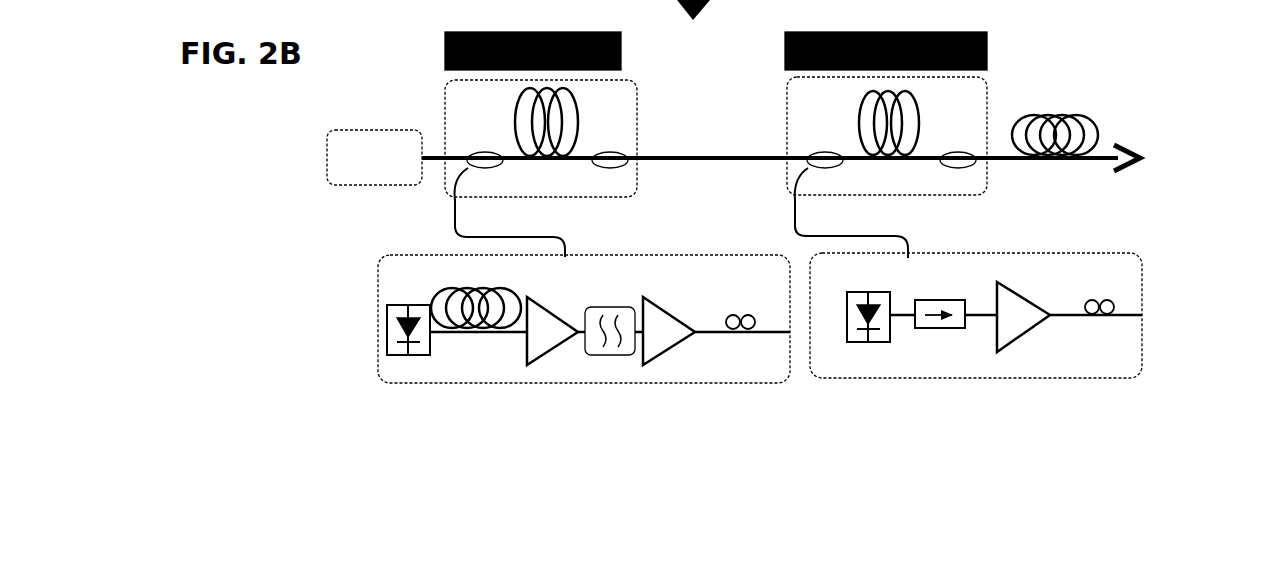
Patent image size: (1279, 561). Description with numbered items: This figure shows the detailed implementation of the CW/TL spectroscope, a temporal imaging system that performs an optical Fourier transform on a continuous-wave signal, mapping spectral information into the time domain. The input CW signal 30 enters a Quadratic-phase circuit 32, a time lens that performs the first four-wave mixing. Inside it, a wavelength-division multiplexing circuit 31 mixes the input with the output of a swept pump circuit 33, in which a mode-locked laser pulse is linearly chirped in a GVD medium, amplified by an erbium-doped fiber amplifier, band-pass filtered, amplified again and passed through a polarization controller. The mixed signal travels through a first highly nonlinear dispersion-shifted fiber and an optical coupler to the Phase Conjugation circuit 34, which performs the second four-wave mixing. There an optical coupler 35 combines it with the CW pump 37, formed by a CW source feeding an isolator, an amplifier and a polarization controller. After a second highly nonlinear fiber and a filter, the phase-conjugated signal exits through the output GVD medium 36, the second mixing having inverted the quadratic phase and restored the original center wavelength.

The input CW signal 30 is at (322, 164).
The wavelength-division multiplexing (WDM) circuit 31 is at (462, 144).
The Quadratic-phase circuit 32 is at (446, 79).
The swept pump circuit 33 is at (375, 325).
The Phase Conjugation circuit 34 is at (994, 88).
The optical coupler 35 is at (807, 154).
The output GVD medium 36 is at (1091, 191).
The CW pump 37 is at (1146, 320).